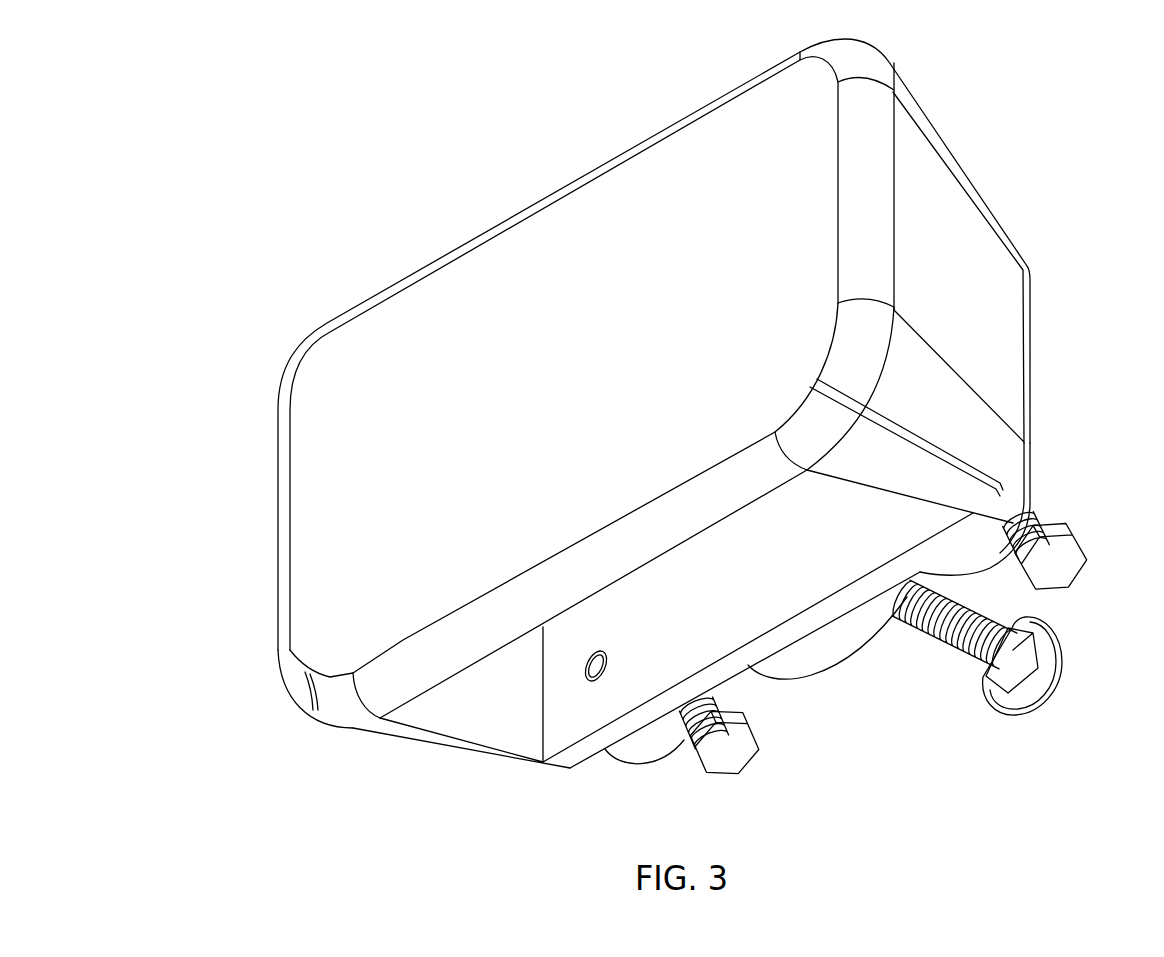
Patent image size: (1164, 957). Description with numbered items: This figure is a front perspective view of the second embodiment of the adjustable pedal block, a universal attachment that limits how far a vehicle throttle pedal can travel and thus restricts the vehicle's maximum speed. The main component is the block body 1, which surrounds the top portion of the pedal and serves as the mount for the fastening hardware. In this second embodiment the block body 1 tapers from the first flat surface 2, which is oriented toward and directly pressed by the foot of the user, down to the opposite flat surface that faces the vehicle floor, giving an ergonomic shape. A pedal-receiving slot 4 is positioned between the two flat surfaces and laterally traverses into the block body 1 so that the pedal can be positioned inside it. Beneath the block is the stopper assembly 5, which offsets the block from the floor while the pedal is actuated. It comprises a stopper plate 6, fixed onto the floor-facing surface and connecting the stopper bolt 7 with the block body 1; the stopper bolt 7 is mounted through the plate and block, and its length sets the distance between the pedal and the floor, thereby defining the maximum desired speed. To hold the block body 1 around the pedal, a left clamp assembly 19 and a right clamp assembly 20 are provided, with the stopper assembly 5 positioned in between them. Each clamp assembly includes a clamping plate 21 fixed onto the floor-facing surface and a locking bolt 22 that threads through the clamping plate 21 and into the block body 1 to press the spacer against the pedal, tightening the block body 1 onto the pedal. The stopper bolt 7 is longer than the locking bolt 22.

The block body 1 is at (478, 148).
The first flat surface 2 is at (303, 530).
The pedal-receiving slot 4 is at (482, 712).
The stopper assembly 5 is at (882, 672).
The stopper plate 6 is at (773, 668).
The stopper bolt 7 is at (1013, 698).
The left clamp assembly 19 is at (1058, 477).
The right clamp assembly 20 is at (687, 760).
The clamping plate 21 is at (635, 755).
The locking bolt 22 is at (738, 772).